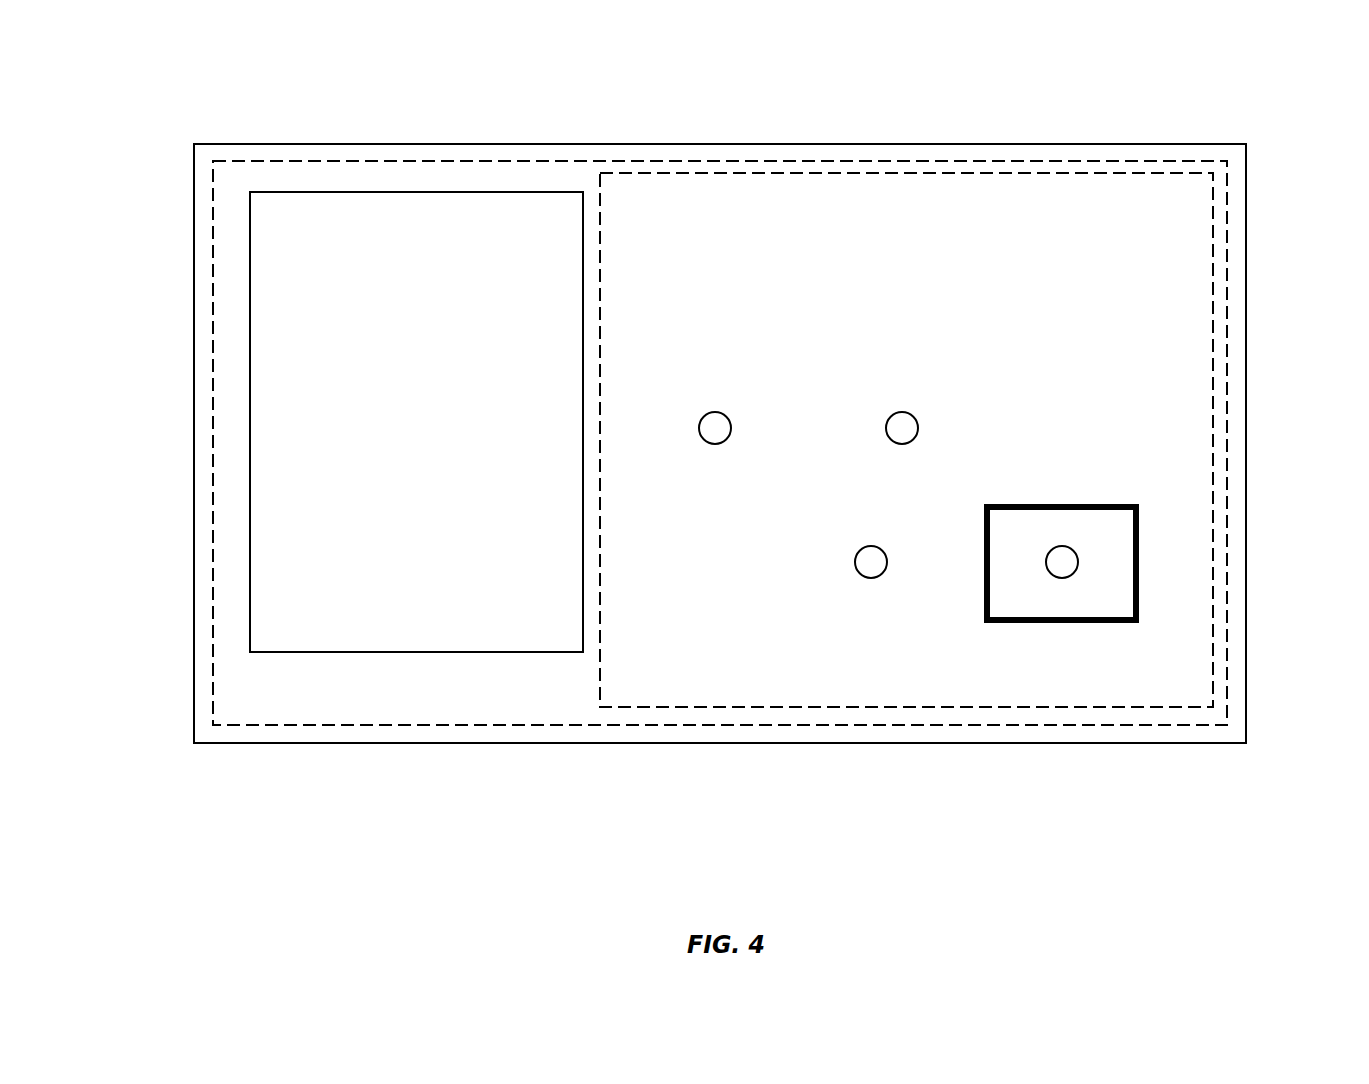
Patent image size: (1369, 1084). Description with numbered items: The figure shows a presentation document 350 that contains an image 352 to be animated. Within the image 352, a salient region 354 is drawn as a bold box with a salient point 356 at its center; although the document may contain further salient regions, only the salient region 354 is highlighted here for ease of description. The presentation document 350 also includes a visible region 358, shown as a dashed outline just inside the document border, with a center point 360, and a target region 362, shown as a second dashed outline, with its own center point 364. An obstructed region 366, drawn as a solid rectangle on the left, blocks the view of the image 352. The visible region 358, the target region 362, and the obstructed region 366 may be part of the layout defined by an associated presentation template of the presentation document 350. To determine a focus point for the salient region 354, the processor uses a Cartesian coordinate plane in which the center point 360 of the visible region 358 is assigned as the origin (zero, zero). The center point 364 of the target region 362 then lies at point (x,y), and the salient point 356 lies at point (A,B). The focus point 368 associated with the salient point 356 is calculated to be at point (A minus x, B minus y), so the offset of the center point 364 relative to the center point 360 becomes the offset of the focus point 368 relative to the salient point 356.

The presentation document 350 is at (132, 102).
The image 352 is at (1155, 145).
The salient region 354 is at (1133, 503).
The salient point 356 is at (1073, 548).
The visible region 358 is at (487, 725).
The center point 360 is at (718, 412).
The target region 362 is at (737, 175).
The center point 364 is at (913, 412).
The obstructed region 366 is at (508, 192).
The focus point 368 is at (860, 546).